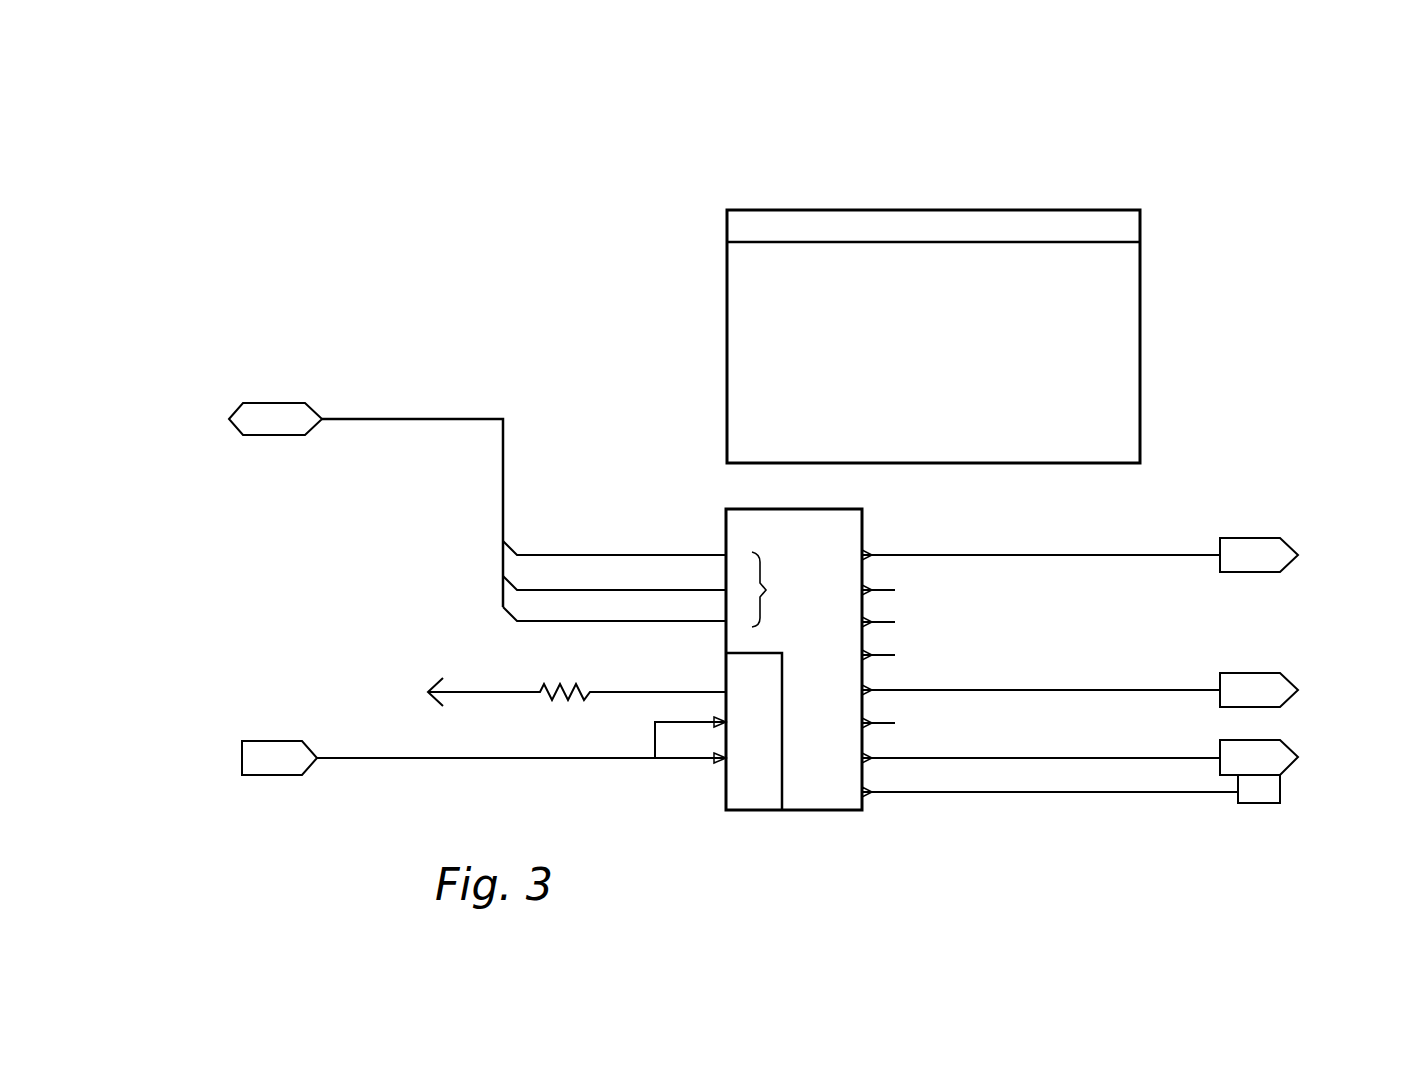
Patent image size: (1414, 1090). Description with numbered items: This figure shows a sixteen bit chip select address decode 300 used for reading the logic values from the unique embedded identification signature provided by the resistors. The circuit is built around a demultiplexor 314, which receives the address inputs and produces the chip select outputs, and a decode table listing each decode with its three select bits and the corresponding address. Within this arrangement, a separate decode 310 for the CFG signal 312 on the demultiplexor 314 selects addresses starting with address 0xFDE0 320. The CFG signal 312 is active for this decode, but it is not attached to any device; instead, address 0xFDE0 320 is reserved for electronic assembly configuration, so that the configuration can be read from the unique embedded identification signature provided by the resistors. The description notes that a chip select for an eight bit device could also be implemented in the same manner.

The 16 bit chip select address decode 300 is at (543, 123).
The separate decode 310 is at (918, 452).
The CFG signal 312 is at (735, 432).
The demultiplexor 314 is at (722, 488).
The address 0xFDE0 320 is at (1085, 412).